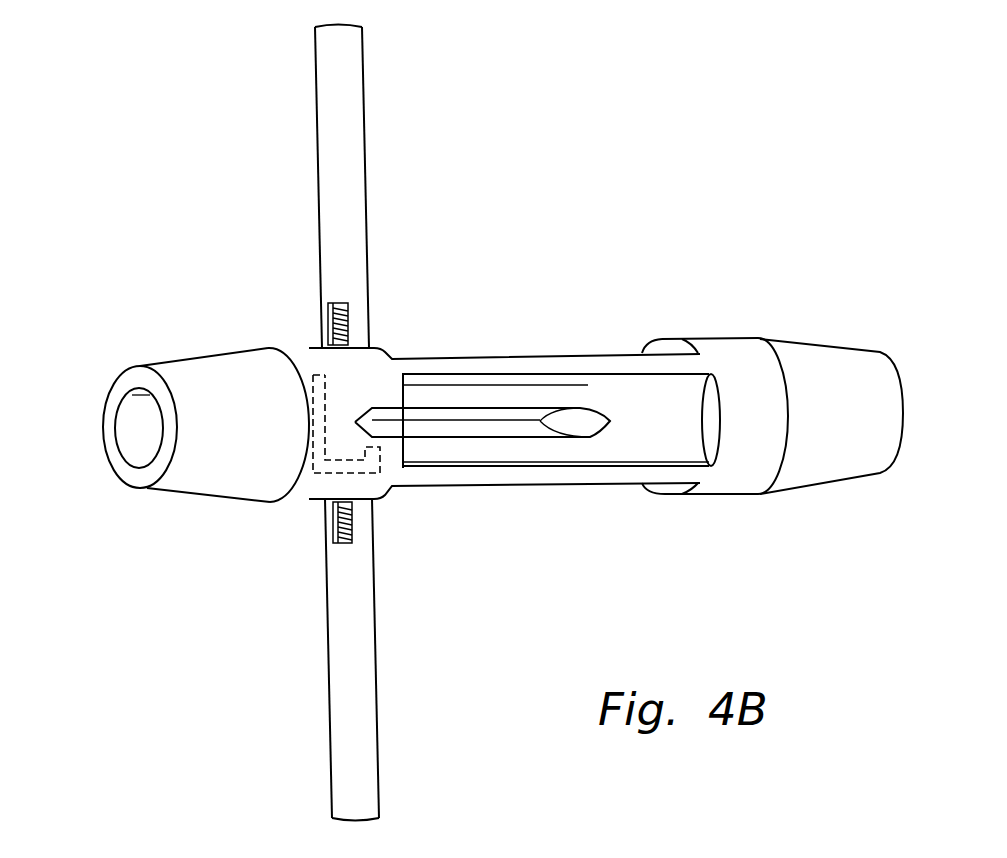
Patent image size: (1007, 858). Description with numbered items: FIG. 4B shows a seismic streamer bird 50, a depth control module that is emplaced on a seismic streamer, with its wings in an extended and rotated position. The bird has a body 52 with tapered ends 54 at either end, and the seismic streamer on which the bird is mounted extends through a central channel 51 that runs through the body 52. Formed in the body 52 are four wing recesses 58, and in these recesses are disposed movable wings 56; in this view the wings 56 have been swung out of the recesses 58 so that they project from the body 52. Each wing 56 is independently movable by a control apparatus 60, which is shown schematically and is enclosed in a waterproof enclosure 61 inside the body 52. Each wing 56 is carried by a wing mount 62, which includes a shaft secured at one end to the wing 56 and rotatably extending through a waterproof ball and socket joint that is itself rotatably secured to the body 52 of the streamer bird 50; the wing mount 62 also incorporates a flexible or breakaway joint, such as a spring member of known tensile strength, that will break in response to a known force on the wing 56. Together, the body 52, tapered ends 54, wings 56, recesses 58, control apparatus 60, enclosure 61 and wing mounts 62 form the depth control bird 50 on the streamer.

The seismic streamer bird 50 is at (462, 314).
The central channel 51 is at (135, 430).
The body 52 is at (727, 347).
The tapered ends 54 is at (208, 362).
The movable wings 56 is at (319, 160).
The wing recesses 58 is at (587, 355).
The control apparatus 60 is at (323, 414).
The waterproof enclosure 61 is at (740, 488).
The wing mount 62 is at (322, 320).